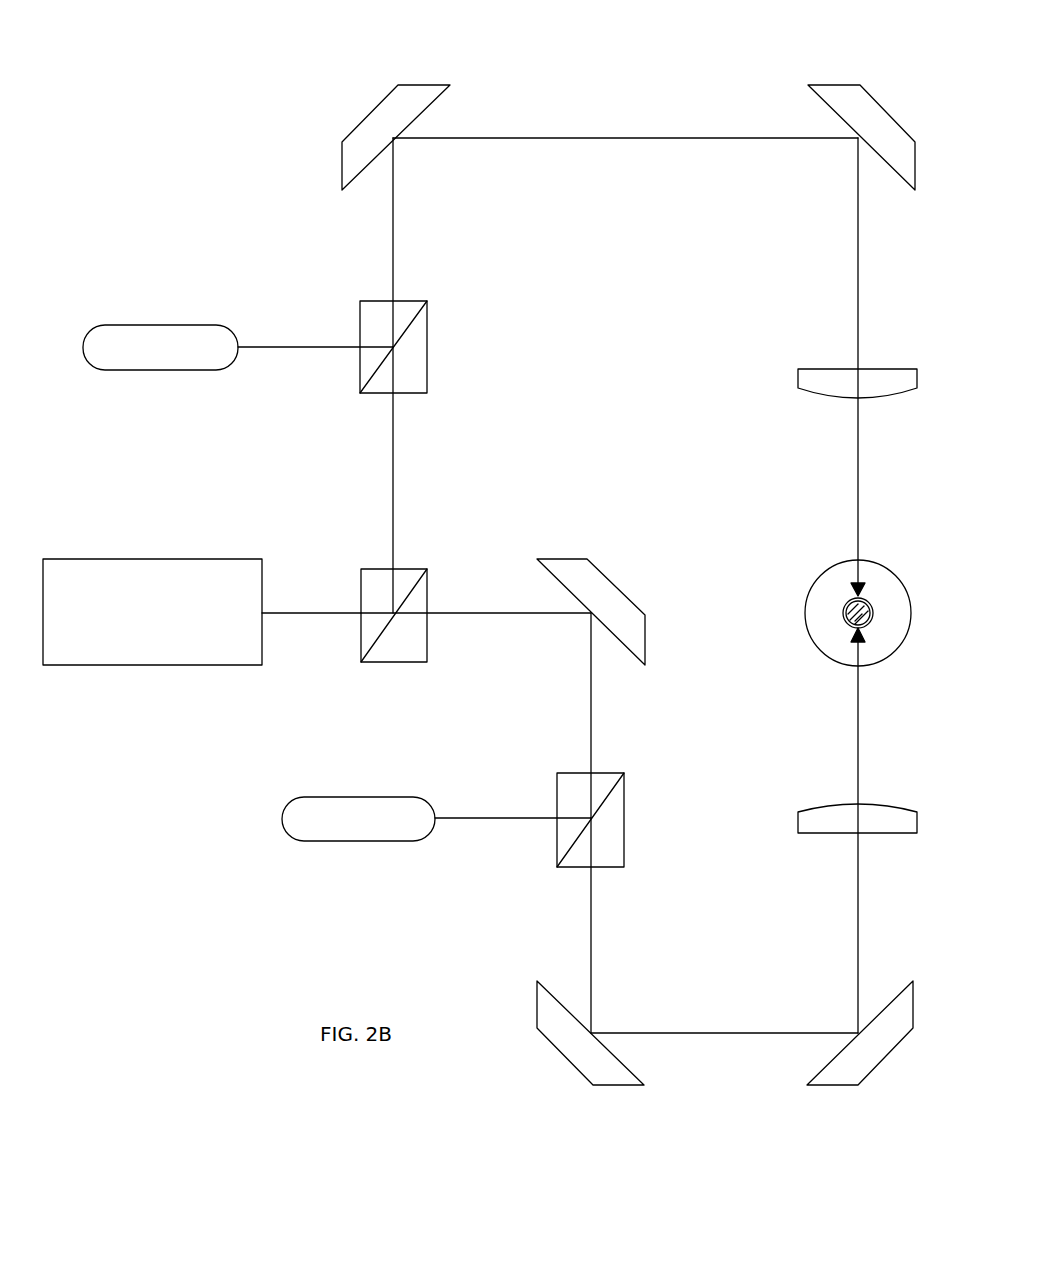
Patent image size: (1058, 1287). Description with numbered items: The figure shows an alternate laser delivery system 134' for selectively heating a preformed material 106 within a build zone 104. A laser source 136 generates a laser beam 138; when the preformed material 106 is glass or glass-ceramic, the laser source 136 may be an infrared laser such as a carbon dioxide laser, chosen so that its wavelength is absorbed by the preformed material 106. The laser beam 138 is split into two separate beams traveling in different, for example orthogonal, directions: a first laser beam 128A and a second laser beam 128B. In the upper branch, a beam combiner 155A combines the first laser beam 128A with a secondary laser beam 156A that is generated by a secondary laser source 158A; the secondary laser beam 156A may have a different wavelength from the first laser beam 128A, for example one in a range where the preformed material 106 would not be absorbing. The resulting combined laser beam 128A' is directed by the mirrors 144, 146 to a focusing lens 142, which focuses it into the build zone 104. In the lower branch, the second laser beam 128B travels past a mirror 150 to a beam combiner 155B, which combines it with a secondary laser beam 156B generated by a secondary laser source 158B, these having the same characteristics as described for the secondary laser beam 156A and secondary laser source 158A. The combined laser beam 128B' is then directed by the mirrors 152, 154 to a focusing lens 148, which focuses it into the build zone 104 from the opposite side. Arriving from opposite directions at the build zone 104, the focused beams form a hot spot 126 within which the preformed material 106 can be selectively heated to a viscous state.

The alternate laser delivery system 134' is at (527, 39).
The mirror 144 is at (372, 113).
The mirror 146 is at (884, 110).
The combined laser beam 128A' is at (625, 242).
The first laser beam 128A is at (364, 480).
The beam combiner 155A is at (377, 298).
The secondary laser source 158A is at (159, 325).
The secondary laser beam 156A is at (304, 347).
The focusing lens 142 is at (882, 367).
The laser source 136 is at (167, 558).
The laser beam 138 is at (319, 610).
The mirror 150 is at (565, 558).
The second laser beam 128B is at (476, 715).
The build zone 104 is at (823, 577).
The hot spot 126 is at (865, 600).
The preformed material 106 is at (870, 617).
The focusing lens 148 is at (880, 835).
The secondary laser source 158B is at (353, 842).
The secondary laser beam 156B is at (496, 815).
The beam combiner 155B is at (610, 867).
The combined laser beam 128B' is at (724, 925).
The mirror 152 is at (619, 1087).
The mirror 154 is at (837, 1087).